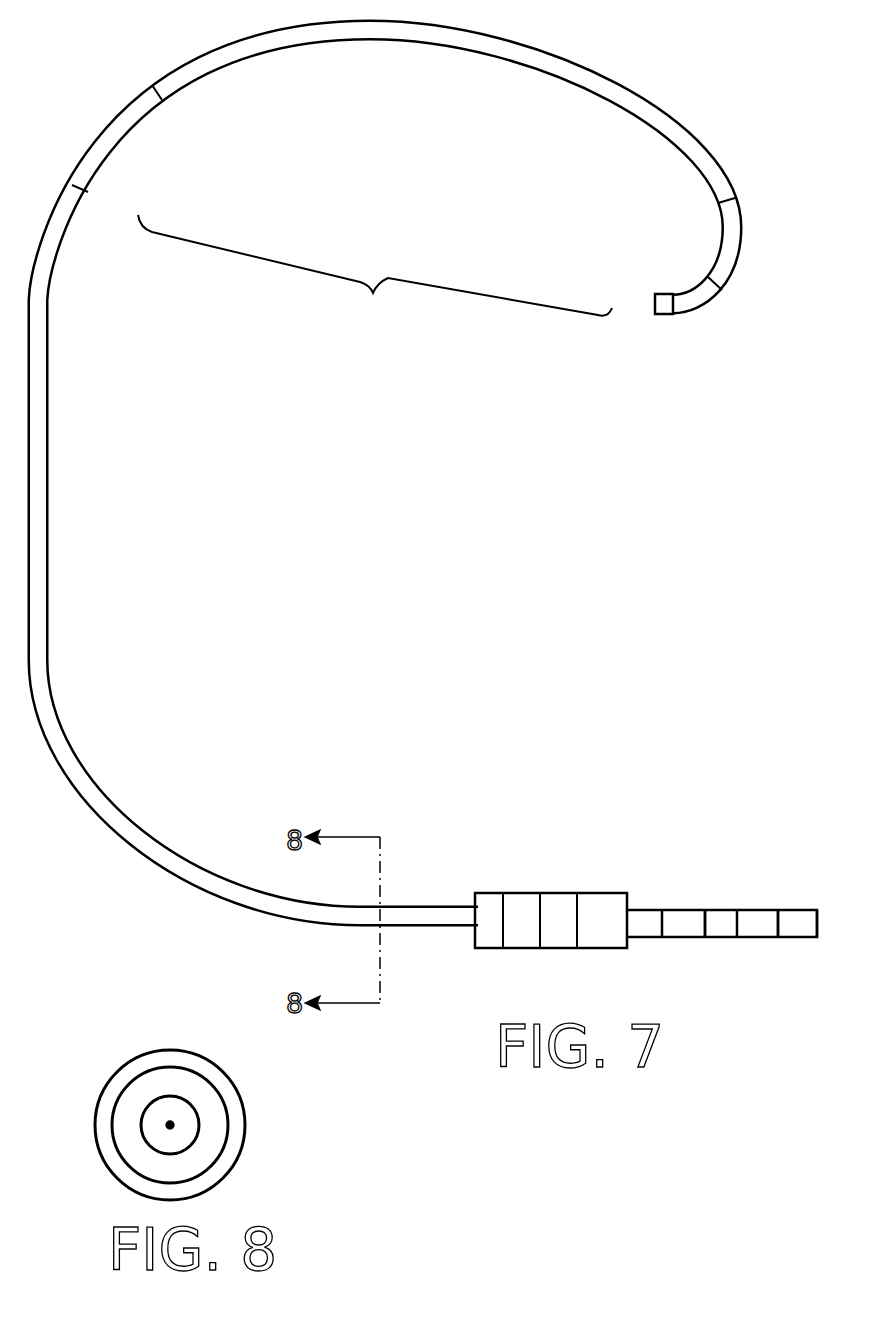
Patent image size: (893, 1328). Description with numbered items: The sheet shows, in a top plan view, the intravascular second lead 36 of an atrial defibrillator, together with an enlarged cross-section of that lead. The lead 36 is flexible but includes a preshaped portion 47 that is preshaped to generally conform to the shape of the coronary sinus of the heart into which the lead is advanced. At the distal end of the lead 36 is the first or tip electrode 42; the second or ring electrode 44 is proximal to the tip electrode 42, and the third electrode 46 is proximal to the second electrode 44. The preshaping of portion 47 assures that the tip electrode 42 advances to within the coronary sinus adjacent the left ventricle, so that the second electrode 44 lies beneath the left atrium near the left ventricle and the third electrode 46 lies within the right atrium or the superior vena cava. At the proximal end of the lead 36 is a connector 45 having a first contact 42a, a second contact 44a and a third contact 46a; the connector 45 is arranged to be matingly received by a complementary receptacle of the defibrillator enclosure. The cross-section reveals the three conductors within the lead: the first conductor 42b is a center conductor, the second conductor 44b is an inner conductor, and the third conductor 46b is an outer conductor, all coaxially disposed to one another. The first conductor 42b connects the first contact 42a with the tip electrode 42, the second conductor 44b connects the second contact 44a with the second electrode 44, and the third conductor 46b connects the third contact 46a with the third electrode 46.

In FIG. 7, the intravascular second lead 36 is at (85, 498).
In FIG. 7, the first or tip electrode 42 is at (665, 315).
In FIG. 7, the second or ring electrode 44 is at (737, 248).
In FIG. 7, the third electrode 46 is at (115, 140).
In FIG. 7, the preshaped portion 47 is at (375, 272).
In FIG. 7, the connector 45 is at (608, 940).
In FIG. 7, the third contact 46a is at (655, 918).
In FIG. 7, the first contact 42a is at (723, 923).
In FIG. 7, the second contact 44a is at (798, 922).
In FIG. 8, the third conductor 46b is at (180, 1065).
In FIG. 8, the second conductor 44b is at (192, 1110).
In FIG. 8, the first conductor 42b is at (172, 1127).